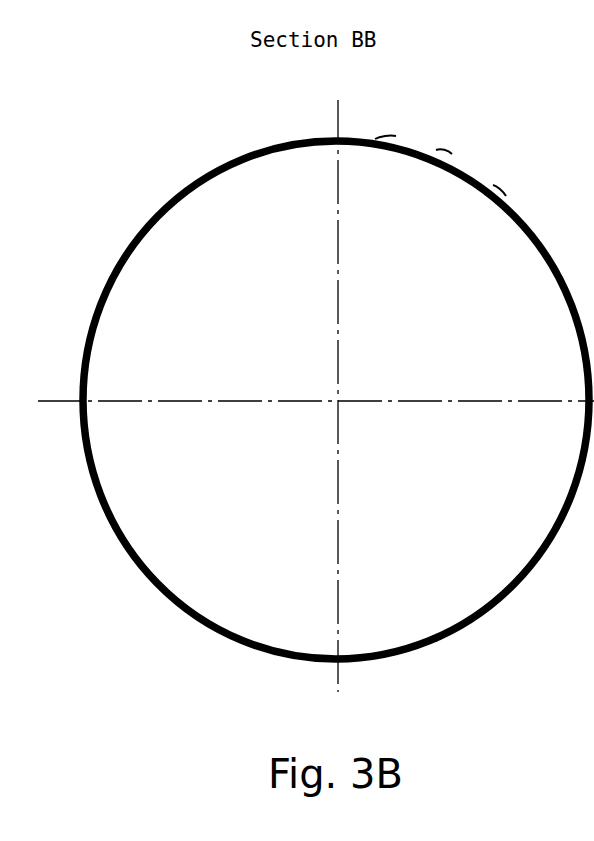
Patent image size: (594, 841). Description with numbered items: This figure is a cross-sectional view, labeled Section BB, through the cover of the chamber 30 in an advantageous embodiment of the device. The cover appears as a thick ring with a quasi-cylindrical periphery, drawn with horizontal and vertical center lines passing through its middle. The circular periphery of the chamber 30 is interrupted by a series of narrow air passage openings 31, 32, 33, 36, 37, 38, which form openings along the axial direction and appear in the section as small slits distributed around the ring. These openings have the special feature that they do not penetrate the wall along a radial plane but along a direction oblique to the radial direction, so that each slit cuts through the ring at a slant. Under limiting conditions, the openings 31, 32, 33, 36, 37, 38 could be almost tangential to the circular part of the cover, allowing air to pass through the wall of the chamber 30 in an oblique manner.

The chamber 30 is at (214, 172).
The air passage opening 31 is at (385, 136).
The air passage opening 32 is at (444, 151).
The air passage opening 33 is at (498, 190).
The air passage opening 36 is at (485, 610).
The air passage opening 37 is at (426, 643).
The air passage opening 38 is at (363, 660).